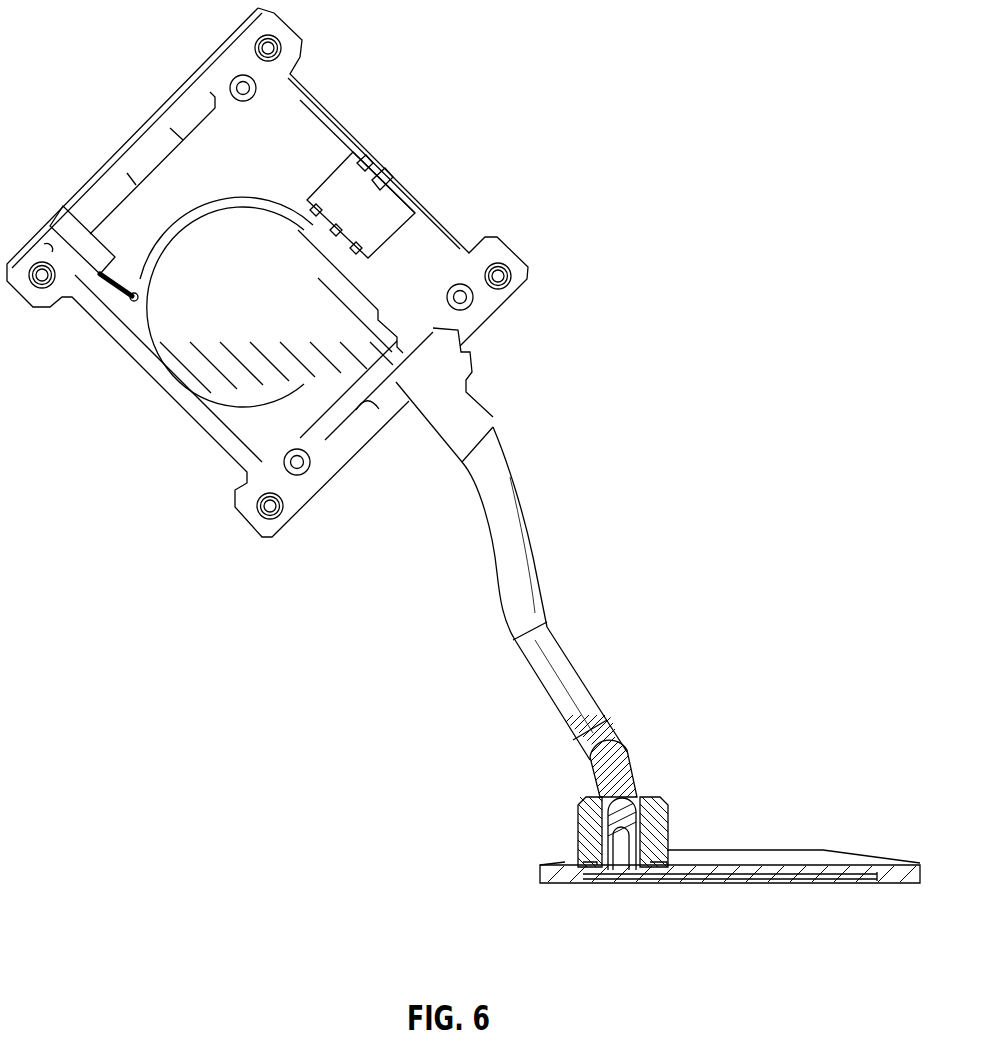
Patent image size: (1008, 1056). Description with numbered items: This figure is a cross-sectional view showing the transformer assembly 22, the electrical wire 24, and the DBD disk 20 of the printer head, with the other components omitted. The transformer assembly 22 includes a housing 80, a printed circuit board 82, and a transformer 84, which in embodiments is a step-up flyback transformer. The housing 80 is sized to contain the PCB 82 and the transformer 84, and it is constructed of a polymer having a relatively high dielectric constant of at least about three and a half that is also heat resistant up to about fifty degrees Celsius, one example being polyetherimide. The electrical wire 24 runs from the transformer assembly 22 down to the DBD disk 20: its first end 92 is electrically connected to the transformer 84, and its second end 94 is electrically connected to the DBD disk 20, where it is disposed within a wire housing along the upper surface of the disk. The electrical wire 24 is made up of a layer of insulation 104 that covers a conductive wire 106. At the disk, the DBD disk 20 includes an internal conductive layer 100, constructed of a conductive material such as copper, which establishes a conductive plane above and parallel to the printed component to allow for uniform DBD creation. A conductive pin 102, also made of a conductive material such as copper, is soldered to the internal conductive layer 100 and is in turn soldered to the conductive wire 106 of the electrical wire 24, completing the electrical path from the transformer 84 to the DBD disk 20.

The DBD disk 20 is at (830, 830).
The transformer assembly 22 is at (413, 143).
The electrical wire 24 is at (580, 670).
The housing 80 is at (115, 150).
The printed circuit board 82 is at (172, 97).
The transformer 84 is at (415, 245).
The first end 92 is at (417, 411).
The second end 94 is at (643, 822).
The internal conductive layer 100 is at (850, 878).
The conductive pin 102 is at (620, 847).
The layer of insulation 104 is at (527, 500).
The conductive wire 106 is at (622, 810).